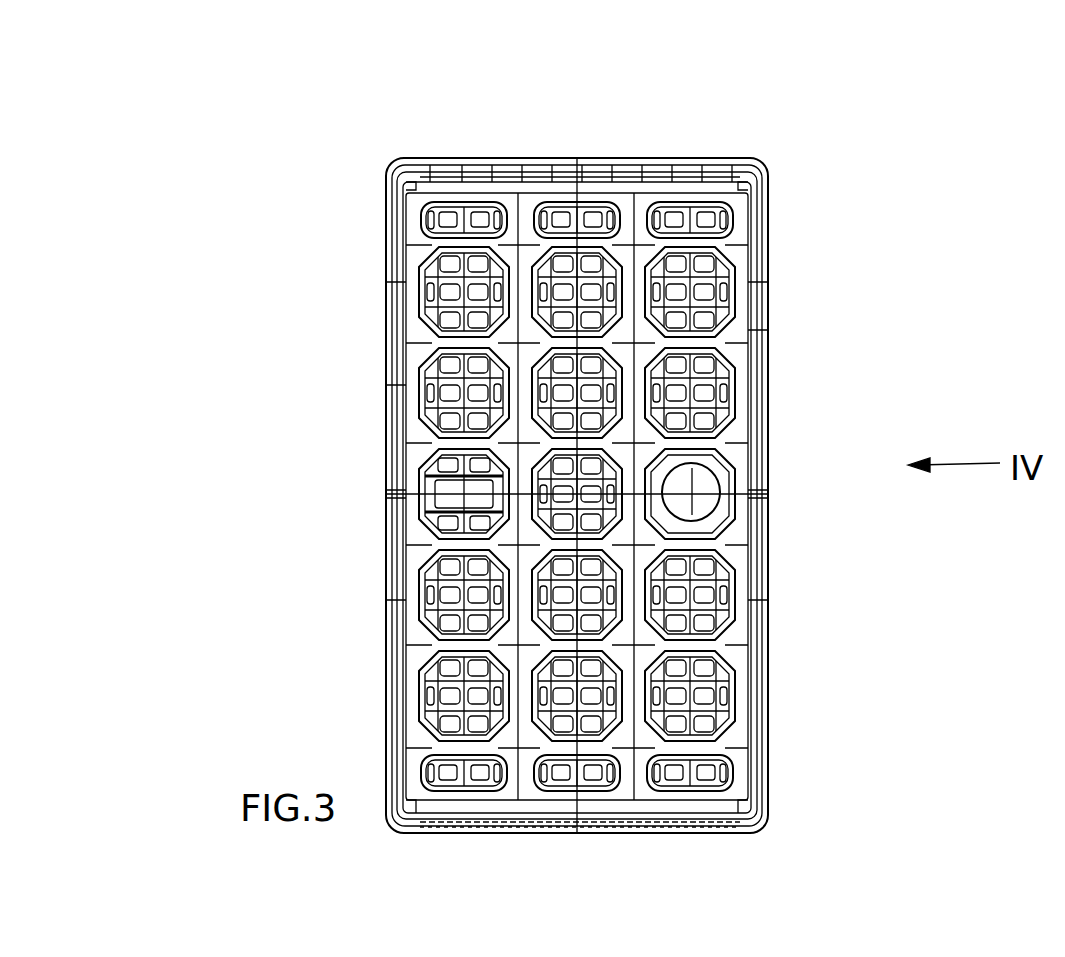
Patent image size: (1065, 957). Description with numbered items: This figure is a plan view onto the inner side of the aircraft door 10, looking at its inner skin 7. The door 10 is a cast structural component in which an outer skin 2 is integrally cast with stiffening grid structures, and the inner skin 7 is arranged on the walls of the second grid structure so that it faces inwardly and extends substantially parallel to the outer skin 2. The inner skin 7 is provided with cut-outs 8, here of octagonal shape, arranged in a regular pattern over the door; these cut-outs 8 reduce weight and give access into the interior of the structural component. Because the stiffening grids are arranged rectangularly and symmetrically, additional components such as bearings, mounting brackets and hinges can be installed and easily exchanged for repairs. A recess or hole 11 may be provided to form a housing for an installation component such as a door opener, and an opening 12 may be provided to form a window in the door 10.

The door 10 is at (636, 434).
The outer skin 2 is at (769, 615).
The inner skin 7 is at (748, 255).
The cut-outs 8 is at (712, 295).
The recess or hole 11 is at (448, 508).
The opening 12 is at (712, 487).